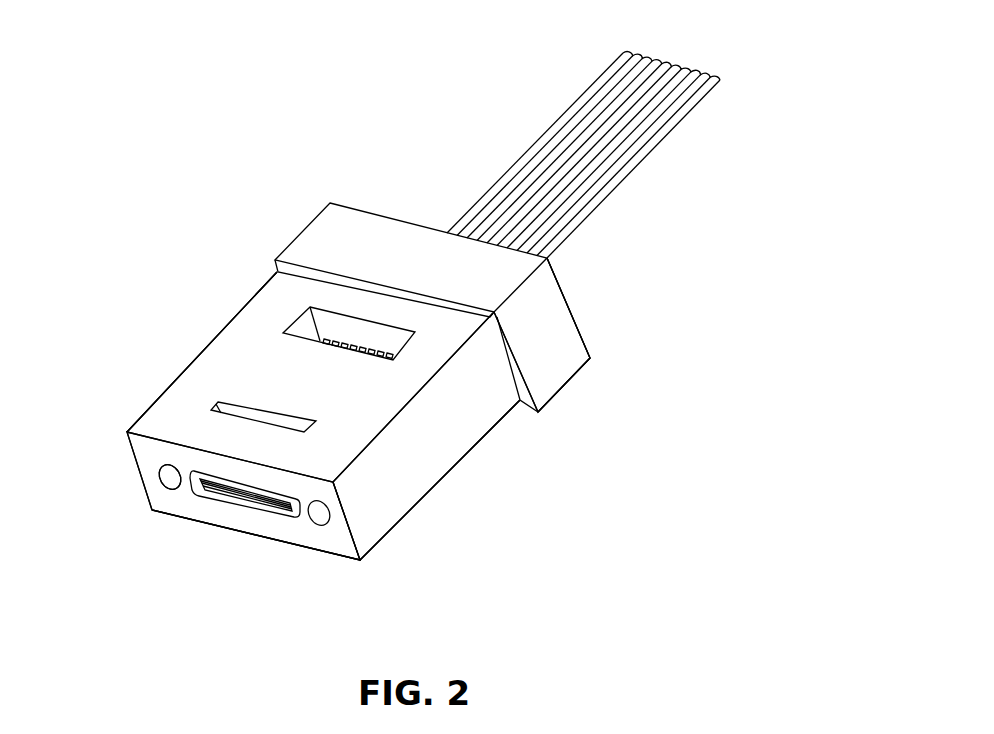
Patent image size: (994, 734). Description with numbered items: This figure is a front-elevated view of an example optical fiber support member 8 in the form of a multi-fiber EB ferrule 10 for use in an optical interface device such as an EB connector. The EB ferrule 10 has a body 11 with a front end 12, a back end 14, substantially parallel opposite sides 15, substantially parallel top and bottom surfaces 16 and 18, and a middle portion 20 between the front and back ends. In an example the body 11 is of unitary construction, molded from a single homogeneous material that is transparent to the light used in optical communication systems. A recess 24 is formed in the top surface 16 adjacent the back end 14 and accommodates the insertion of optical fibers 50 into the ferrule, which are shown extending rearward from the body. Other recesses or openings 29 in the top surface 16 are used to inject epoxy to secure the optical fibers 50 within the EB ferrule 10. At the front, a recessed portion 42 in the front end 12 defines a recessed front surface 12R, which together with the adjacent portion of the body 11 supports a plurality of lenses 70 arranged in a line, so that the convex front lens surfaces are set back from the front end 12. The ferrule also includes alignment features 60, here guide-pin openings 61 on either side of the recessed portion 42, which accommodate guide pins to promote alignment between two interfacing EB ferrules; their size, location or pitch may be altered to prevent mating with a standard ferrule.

The optical fiber support member 8 is at (118, 260).
The EB ferrule 10 is at (250, 188).
The body 11 is at (177, 402).
The front end 12 is at (143, 448).
The recessed front surface 12R is at (260, 497).
The back end 14 is at (563, 287).
The sides 15 is at (265, 295).
The top surface 16 is at (300, 287).
The bottom surface 18 is at (377, 548).
The middle portion 20 is at (580, 390).
The recess 24 is at (423, 218).
The openings 29 is at (310, 330).
The recessed portion 42 is at (223, 497).
The optical fibers 50 is at (553, 102).
The alignment features 60 is at (160, 493).
The guide-pin openings 61 is at (177, 490).
The lenses 70 is at (273, 500).